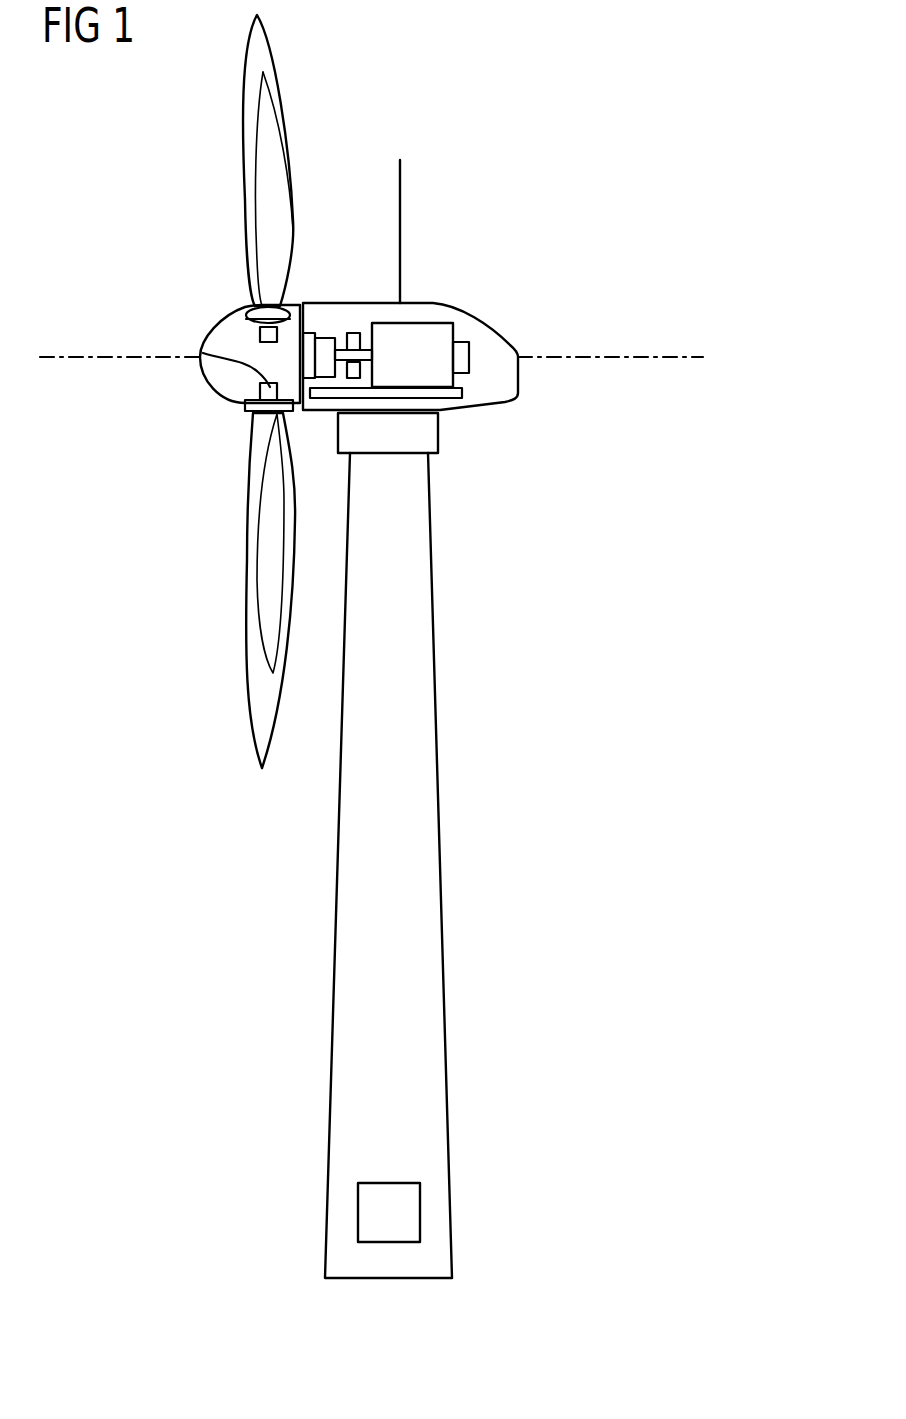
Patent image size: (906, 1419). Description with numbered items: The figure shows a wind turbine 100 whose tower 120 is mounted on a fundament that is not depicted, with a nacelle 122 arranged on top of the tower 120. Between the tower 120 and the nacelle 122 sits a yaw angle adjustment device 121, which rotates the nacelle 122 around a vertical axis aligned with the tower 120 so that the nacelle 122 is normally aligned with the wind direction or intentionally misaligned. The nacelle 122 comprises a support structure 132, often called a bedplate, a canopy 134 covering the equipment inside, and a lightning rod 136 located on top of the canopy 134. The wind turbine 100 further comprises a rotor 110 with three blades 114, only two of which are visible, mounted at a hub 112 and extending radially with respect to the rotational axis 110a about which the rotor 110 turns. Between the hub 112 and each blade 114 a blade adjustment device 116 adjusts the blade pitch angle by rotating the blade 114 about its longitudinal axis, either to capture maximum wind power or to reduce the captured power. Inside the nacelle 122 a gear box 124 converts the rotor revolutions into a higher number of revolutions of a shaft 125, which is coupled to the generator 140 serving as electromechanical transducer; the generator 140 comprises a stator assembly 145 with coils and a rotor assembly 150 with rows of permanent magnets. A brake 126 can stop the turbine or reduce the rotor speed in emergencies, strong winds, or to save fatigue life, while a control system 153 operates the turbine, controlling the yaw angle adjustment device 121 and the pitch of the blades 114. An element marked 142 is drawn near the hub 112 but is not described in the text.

The wind turbine 100 is at (578, 168).
The rotor 110 is at (170, 268).
The rotational axis 110a is at (90, 355).
The hub 112 is at (203, 375).
The blades 114 is at (244, 150).
The blade adjustment device 116 is at (247, 312).
The tower 120 is at (434, 575).
The yaw angle adjustment device 121 is at (440, 437).
The nacelle 122 is at (437, 301).
The gear box 124 is at (322, 338).
The shaft 125 is at (342, 358).
The brake 126 is at (355, 330).
The support structure 132 is at (417, 324).
The canopy 134 is at (493, 325).
The lightning rod 136 is at (402, 182).
The generator 140 is at (432, 354).
The pitch drive 142 is at (257, 347).
The stator assembly 145 is at (425, 323).
The rotor assembly 150 is at (472, 364).
The control system 153 is at (420, 1228).